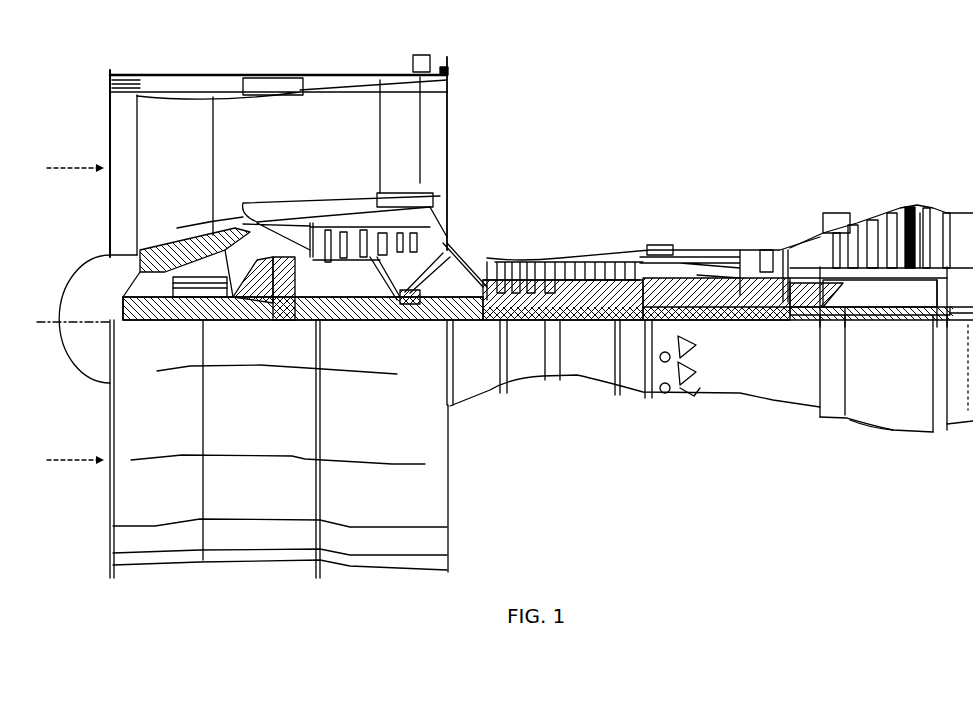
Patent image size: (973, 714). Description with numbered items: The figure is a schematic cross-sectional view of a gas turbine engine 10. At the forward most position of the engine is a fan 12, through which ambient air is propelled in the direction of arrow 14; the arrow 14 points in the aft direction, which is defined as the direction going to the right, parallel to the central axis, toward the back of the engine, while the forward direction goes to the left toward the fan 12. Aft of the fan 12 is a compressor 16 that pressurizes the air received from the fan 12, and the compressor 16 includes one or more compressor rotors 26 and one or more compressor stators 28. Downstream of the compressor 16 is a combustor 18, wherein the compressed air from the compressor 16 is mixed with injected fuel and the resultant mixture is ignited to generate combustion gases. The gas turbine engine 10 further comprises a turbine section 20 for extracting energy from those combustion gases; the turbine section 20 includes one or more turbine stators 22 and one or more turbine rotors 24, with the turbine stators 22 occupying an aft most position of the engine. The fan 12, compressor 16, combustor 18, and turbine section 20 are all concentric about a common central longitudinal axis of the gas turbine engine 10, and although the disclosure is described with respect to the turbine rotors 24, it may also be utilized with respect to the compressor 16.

The gas turbine engine 10 is at (868, 102).
The fan 12 is at (118, 78).
The arrow 14 is at (76, 165).
The compressor 16 is at (530, 262).
The combustor 18 is at (705, 258).
The turbine section 20 is at (892, 418).
The turbine stators 22 is at (873, 217).
The turbine rotors 24 is at (910, 213).
The compressor rotors 26 is at (535, 262).
The compressor stators 28 is at (540, 260).